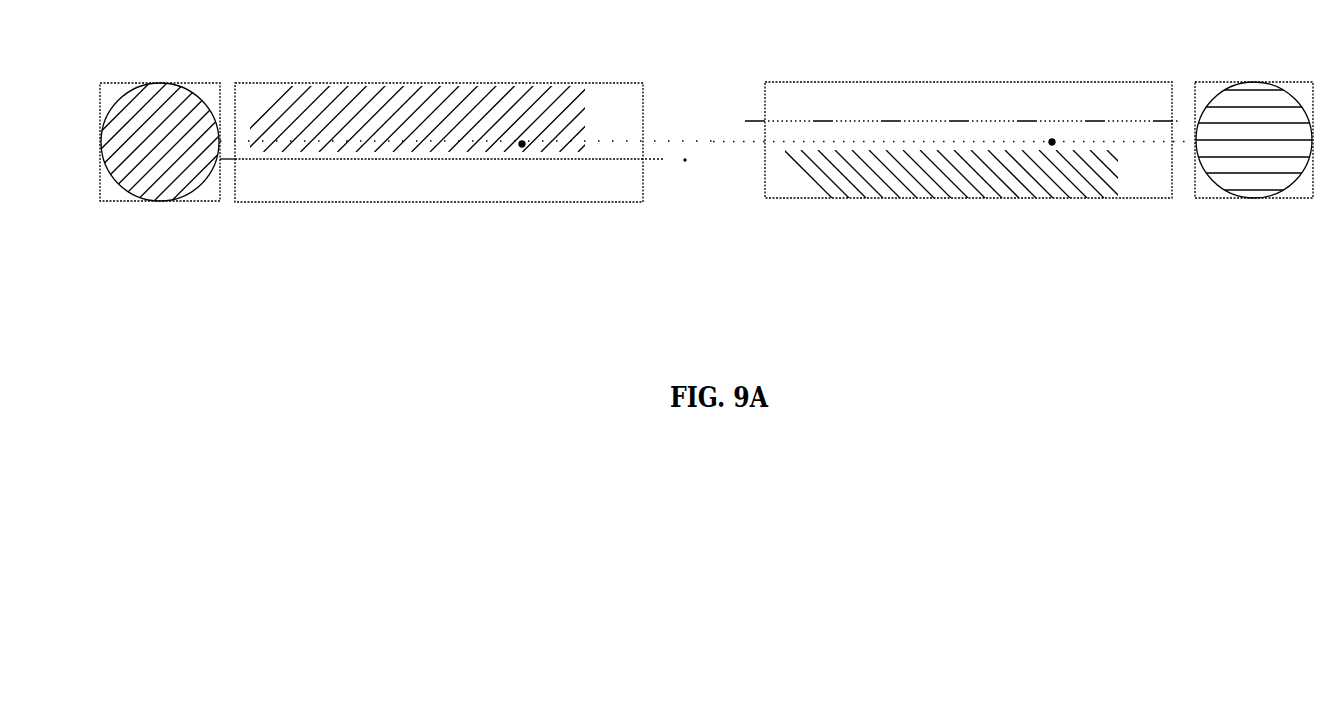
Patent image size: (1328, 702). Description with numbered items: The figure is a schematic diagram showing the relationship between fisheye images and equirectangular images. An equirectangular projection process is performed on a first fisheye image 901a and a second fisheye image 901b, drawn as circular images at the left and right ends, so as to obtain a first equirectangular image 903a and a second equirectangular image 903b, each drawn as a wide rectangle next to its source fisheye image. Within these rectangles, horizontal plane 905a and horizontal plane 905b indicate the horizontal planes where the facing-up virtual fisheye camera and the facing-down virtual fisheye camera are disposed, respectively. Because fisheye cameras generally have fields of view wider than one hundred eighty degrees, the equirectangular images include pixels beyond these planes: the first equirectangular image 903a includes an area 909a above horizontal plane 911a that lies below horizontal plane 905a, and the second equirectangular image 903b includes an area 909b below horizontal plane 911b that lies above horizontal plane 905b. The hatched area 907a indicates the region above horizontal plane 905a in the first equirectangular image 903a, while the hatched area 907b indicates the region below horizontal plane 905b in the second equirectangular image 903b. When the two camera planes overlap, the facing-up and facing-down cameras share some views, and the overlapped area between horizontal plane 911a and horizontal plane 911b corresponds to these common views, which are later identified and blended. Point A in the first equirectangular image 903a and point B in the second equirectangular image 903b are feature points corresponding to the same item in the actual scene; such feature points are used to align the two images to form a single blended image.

The first fisheye image 901a is at (171, 159).
The first equirectangular image 903a is at (431, 159).
The horizontal plane 905a is at (685, 141).
The area 907a is at (340, 92).
The area 909a is at (488, 148).
The horizontal plane 911a is at (466, 175).
The point A is at (522, 144).
The second fisheye image 901b is at (1255, 159).
The second equirectangular image 903b is at (968, 158).
The horizontal plane 905b is at (807, 141).
The area 907b is at (1002, 166).
The area 909b is at (1052, 140).
The horizontal plane 911b is at (950, 108).
The point B is at (1054, 139).